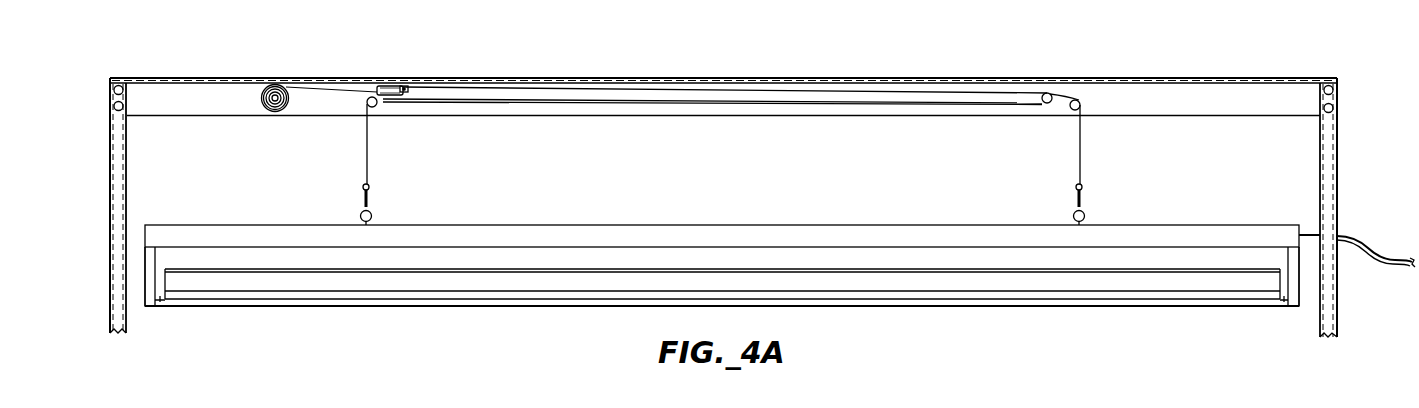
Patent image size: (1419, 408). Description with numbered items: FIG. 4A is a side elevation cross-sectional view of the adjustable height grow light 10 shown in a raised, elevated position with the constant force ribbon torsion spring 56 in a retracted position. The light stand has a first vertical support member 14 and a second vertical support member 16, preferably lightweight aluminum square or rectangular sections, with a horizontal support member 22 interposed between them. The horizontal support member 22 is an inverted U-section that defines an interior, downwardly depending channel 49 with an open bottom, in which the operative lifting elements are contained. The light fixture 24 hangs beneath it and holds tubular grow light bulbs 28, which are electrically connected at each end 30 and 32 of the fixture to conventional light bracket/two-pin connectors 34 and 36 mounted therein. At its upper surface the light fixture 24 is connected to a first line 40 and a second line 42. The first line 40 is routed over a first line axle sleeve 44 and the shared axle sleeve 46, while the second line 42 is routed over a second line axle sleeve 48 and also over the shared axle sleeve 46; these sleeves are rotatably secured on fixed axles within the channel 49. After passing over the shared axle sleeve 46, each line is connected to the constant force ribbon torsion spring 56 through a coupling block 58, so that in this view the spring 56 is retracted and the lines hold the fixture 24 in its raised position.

The adjustable height grow light 10 is at (787, 68).
The first vertical support member 14 is at (120, 190).
The second vertical support member 16 is at (1322, 183).
The horizontal support member 22 is at (1236, 78).
The light fixture 24 is at (730, 229).
The tubular grow light bulbs 28 is at (443, 279).
The first end of the light fixture 30 is at (150, 305).
The second end of the light fixture 32 is at (1296, 305).
The light bracket/two-pin connector 34 is at (160, 302).
The light bracket/two-pin connector 36 is at (1284, 302).
The first line 40 is at (368, 160).
The second line 42 is at (1081, 162).
The first line axle sleeve 44 is at (376, 107).
The shared axle sleeve 46 is at (1045, 104).
The second line axle sleeve 48 is at (1076, 100).
The channel 49 is at (208, 100).
The constant force ribbon torsion spring 56 is at (264, 86).
The coupling block 58 is at (385, 86).